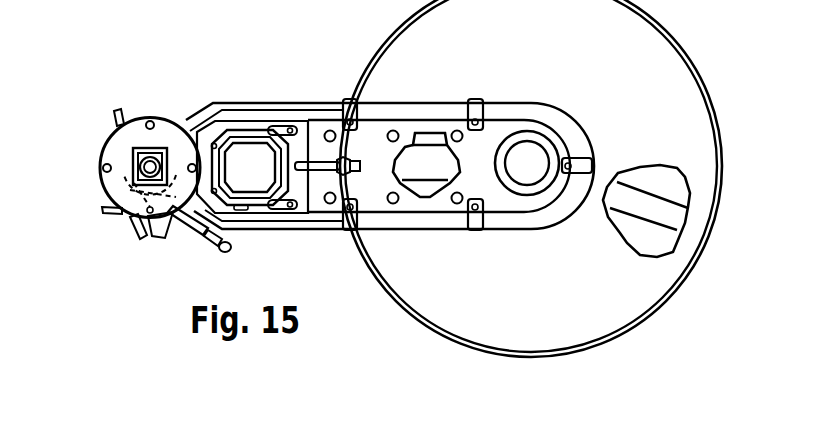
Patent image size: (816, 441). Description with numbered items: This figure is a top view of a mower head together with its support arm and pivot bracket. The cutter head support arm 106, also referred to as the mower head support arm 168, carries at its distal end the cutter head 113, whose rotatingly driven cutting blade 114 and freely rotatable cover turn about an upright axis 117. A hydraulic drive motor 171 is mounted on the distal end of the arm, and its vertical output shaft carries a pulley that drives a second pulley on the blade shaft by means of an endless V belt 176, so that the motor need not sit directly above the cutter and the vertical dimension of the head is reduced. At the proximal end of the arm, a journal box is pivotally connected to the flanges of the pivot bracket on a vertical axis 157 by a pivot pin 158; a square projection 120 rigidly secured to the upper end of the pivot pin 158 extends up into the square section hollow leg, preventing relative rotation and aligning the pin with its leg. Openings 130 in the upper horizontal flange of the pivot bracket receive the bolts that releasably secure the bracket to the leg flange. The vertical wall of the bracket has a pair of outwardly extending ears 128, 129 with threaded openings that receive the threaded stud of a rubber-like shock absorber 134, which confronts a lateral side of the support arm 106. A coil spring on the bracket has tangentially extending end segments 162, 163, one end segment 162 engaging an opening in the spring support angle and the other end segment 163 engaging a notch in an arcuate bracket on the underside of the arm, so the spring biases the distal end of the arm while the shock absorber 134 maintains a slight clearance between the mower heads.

The cutter head support arm 106 is at (433, 230).
The cutter head 113 is at (652, 20).
The cutting blade 114 is at (648, 203).
The upright axis 117 is at (526, 162).
The square projection 120 is at (132, 147).
The ear 128 is at (130, 226).
The ear 129 is at (115, 125).
The openings 130 is at (190, 165).
The shock absorber 134 is at (169, 233).
The vertical axis 157 is at (133, 152).
The pivot pin 158 is at (140, 177).
The end segment 162 is at (112, 216).
The end segment 163 is at (228, 254).
The mower head support arm 168 is at (326, 103).
The hydraulic drive motor 171 is at (249, 168).
The V belt 176 is at (432, 140).